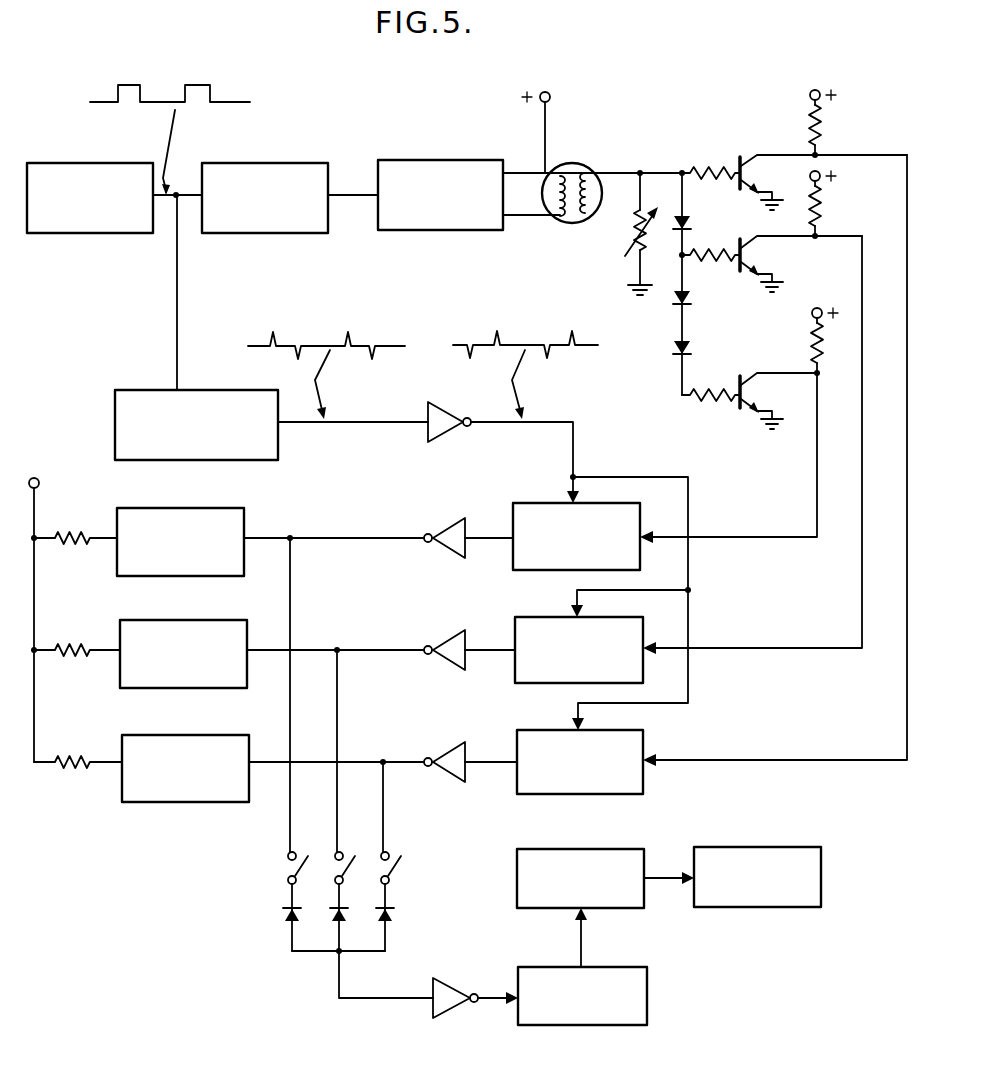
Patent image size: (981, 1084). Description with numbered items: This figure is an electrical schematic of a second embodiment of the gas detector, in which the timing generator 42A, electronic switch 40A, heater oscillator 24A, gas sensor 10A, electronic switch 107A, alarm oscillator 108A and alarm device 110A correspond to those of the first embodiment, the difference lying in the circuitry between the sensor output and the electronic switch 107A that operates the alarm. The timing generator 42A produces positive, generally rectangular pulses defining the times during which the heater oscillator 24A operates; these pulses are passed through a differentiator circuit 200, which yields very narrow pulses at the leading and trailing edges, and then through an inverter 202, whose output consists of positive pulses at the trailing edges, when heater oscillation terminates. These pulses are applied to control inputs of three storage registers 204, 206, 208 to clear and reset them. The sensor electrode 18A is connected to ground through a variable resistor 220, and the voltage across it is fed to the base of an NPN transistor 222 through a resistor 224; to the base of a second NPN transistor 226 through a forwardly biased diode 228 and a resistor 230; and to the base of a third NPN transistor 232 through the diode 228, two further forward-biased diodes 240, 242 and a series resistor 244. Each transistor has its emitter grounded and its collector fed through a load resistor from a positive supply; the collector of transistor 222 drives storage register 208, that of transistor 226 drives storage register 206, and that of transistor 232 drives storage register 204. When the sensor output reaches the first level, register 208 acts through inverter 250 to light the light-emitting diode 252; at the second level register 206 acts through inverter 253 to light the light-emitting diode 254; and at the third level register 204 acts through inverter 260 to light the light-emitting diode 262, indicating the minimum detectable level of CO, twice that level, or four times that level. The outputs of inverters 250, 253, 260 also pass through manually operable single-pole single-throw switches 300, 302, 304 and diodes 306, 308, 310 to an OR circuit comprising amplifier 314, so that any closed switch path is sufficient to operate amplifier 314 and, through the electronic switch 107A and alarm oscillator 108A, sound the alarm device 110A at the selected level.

The timing generator 42A is at (72, 153).
The electronic switch 40A is at (252, 153).
The heater oscillator 24A is at (438, 153).
The gas sensor 10A is at (586, 168).
The sensor electrode 18A is at (578, 212).
The variable resistor 220 is at (627, 254).
The resistor 224 is at (703, 168).
The forwardly biased diode 228 is at (692, 222).
The resistor 230 is at (700, 260).
The forward-biased diode 240 is at (691, 297).
The forward-biased diode 242 is at (692, 347).
The series resistor 244 is at (710, 400).
The NPN transistor 222 is at (823, 150).
The NPN transistor 226 is at (801, 231).
The NPN transistor 232 is at (789, 368).
The differentiator circuit 200 is at (140, 390).
The inverter 202 is at (448, 436).
The storage register 204 is at (526, 503).
The storage register 206 is at (527, 617).
The storage register 208 is at (533, 730).
The inverter 260 is at (438, 527).
The inverter 253 is at (445, 638).
The inverter 250 is at (458, 742).
The light-emitting diode 262 is at (196, 576).
The light-emitting diode 254 is at (150, 688).
The light-emitting diode 252 is at (198, 802).
The manually-operable single-pole single-throw switch 304 is at (287, 857).
The manually-operable single-pole single-throw switch 302 is at (360, 842).
The manually-operable single-pole single-throw switch 300 is at (390, 853).
The diode 310 is at (283, 920).
The diode 308 is at (347, 918).
The diode 306 is at (394, 918).
The amplifier 314 is at (447, 1010).
The electronic switch 107A is at (592, 1025).
The alarm oscillator 108A is at (572, 842).
The alarm device 110A is at (742, 907).